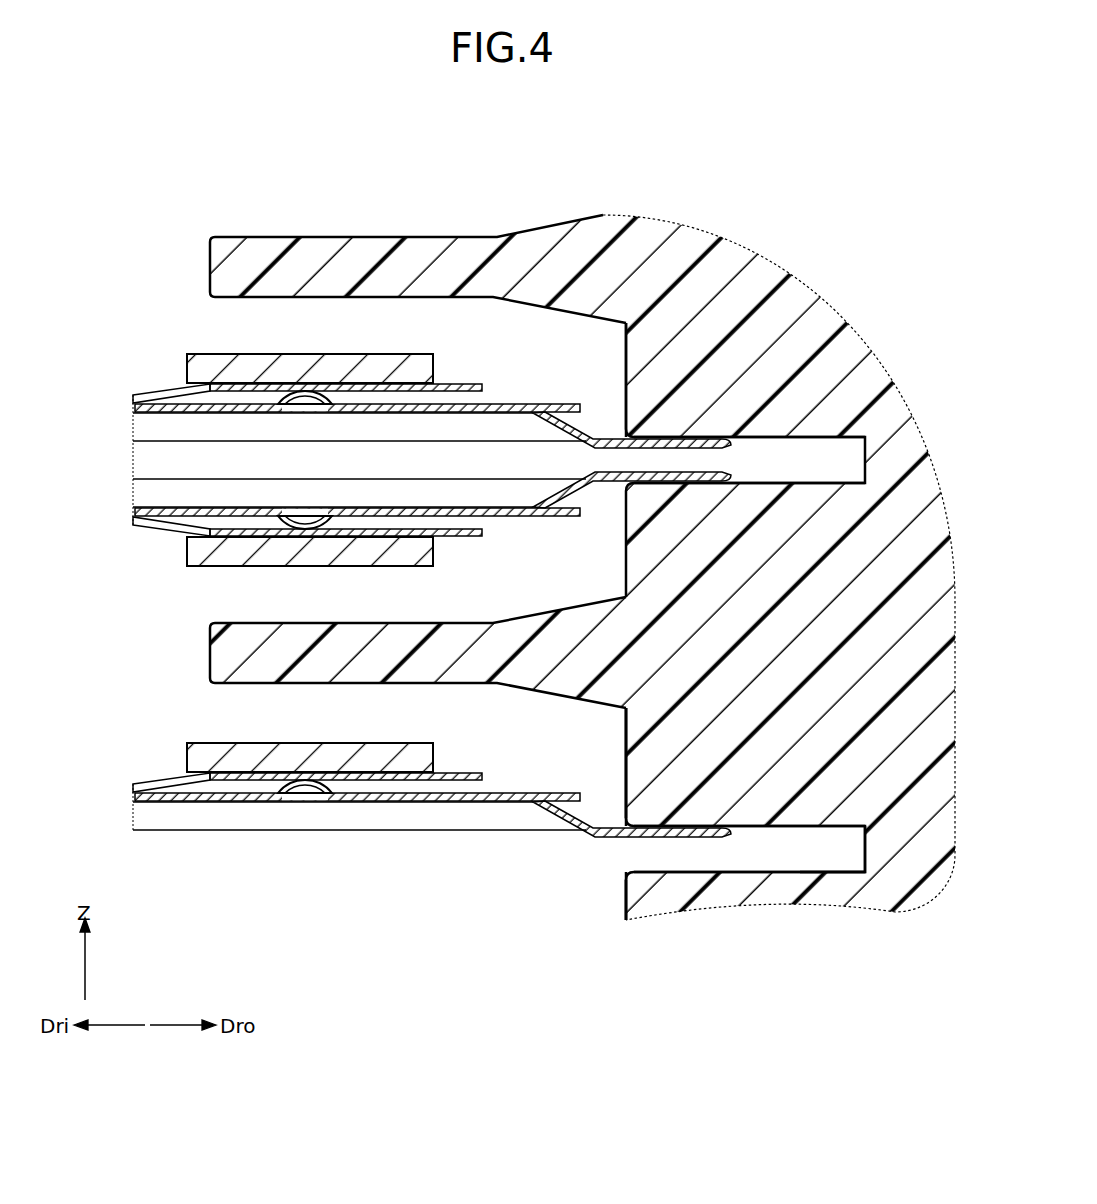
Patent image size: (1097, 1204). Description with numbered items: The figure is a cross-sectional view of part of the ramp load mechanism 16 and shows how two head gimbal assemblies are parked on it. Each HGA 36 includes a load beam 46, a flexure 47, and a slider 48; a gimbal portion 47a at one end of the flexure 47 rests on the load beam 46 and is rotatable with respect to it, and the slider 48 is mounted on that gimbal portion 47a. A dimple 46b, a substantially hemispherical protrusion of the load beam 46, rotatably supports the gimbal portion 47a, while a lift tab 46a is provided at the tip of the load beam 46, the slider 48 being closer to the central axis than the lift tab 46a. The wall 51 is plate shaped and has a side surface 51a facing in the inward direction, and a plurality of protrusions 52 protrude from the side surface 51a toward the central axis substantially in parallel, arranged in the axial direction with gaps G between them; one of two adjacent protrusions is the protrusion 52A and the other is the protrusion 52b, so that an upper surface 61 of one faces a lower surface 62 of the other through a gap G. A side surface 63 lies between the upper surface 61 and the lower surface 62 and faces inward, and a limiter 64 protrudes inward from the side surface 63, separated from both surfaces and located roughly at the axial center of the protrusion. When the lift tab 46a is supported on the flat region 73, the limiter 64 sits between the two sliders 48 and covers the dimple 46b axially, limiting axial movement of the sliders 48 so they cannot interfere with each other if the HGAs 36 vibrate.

The ramp load mechanism 16 is at (167, 209).
The HGA 36 is at (139, 498).
The load beam 46 is at (430, 583).
The lift tab 46a is at (723, 447).
The dimple 46b is at (287, 397).
The flexure 47 is at (289, 598).
The gimbal portion 47a is at (318, 387).
The slider 48 is at (200, 368).
The wall 51 is at (910, 858).
The side surface 51a is at (855, 860).
The protrusion 52 is at (698, 268).
The protrusion 52A is at (682, 893).
The protrusion 52b is at (655, 717).
The upper surface 61 is at (802, 483).
The lower surface 62 is at (770, 450).
The side surface 63 is at (617, 357).
The limiter 64 is at (420, 268).
The flat region 73 is at (672, 613).
The gap G is at (843, 457).